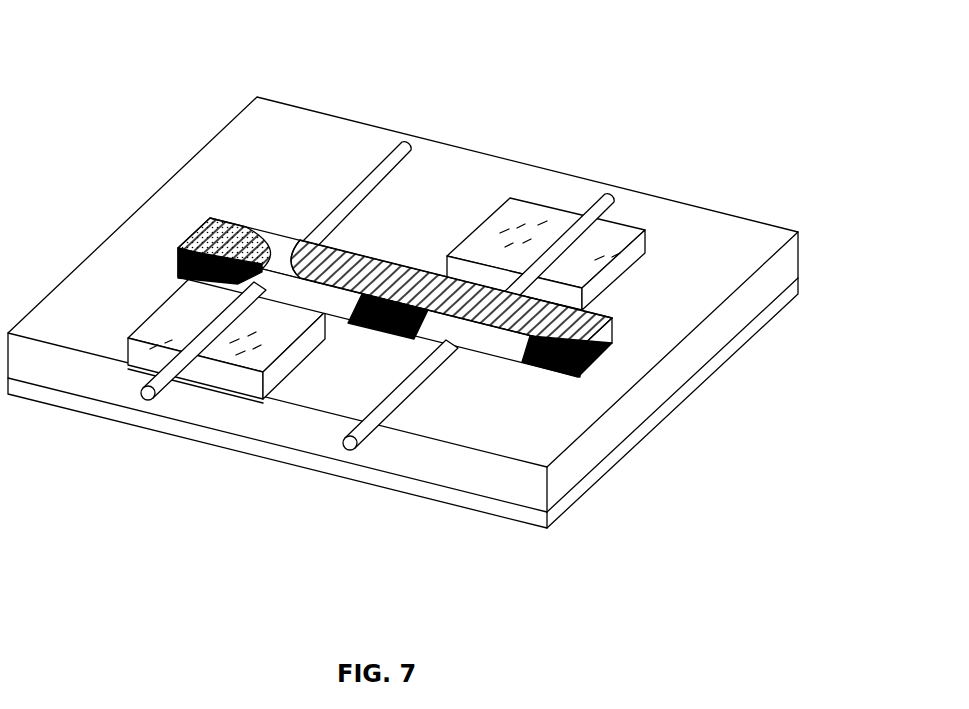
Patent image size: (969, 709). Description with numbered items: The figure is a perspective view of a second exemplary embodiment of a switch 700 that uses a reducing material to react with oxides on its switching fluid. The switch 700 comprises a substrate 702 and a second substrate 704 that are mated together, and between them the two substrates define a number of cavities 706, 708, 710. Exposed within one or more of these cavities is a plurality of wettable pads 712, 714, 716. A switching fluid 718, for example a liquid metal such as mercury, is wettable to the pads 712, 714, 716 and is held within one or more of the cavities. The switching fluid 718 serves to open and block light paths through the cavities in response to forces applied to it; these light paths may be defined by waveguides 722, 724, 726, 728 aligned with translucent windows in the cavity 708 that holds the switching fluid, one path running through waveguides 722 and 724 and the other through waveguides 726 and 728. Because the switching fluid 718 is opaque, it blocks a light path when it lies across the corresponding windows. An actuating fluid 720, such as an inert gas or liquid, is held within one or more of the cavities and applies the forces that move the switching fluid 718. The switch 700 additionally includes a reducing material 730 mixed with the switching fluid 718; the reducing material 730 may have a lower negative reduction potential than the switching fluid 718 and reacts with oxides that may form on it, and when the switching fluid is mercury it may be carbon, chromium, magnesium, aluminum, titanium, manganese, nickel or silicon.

The switch 700 is at (672, 128).
The substrate 702 is at (100, 247).
The second substrate 704 is at (512, 527).
The cavity 706 is at (128, 362).
The cavity 708 is at (395, 321).
The cavity 710 is at (632, 273).
The wettable pad 712 is at (230, 225).
The wettable pad 714 is at (385, 333).
The wettable pad 716 is at (533, 363).
The switching fluid 718 is at (180, 265).
The actuating fluid 720 is at (188, 303).
The waveguide 722 is at (160, 392).
The waveguide 724 is at (382, 153).
The waveguide 726 is at (364, 444).
The waveguide 728 is at (587, 207).
The reducing material 730 is at (360, 267).